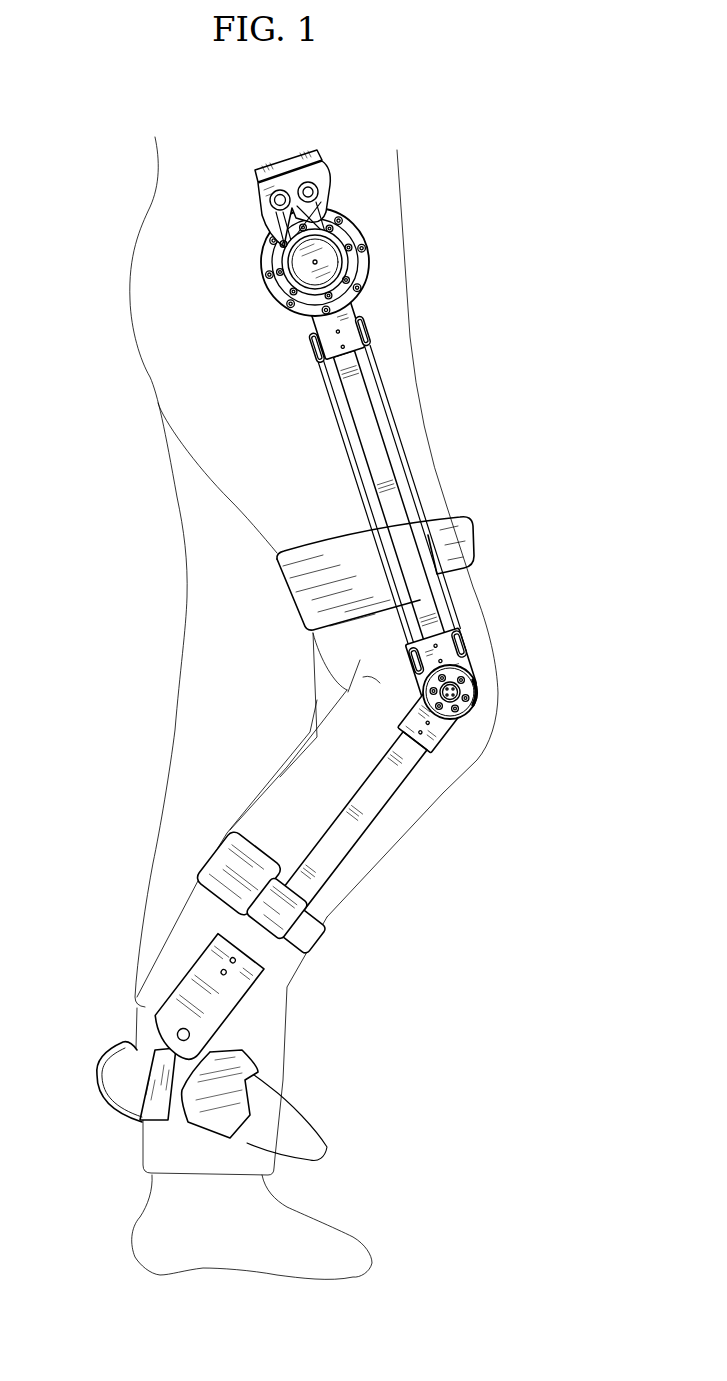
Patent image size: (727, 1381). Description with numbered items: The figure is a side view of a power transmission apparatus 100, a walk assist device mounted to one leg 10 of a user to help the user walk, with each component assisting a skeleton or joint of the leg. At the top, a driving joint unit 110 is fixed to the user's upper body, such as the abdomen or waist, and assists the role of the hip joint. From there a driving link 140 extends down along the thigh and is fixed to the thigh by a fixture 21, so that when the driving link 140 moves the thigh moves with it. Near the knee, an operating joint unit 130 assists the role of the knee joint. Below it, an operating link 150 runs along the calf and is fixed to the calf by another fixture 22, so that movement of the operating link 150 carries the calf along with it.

The power transmission apparatus 100 is at (43, 122).
The leg 10 is at (296, 790).
The driving joint unit 110 is at (381, 274).
The driving link 140 is at (370, 430).
The fixture 21 is at (458, 545).
The operating joint unit 130 is at (488, 697).
The operating link 150 is at (350, 816).
The fixture 22 is at (330, 947).